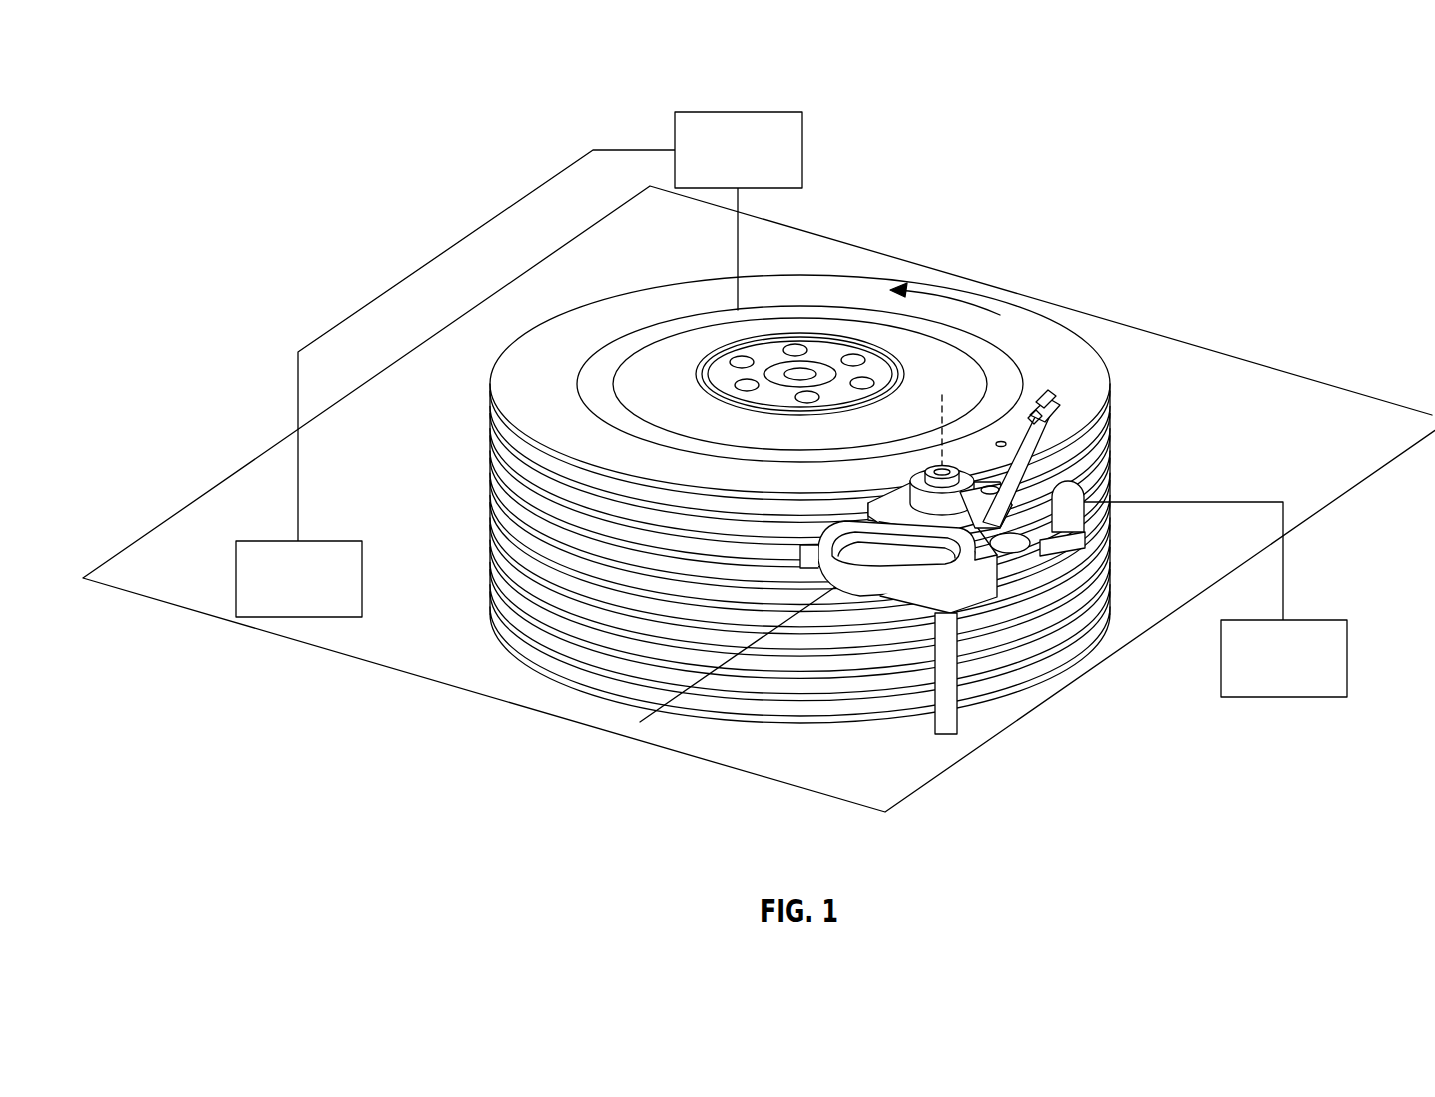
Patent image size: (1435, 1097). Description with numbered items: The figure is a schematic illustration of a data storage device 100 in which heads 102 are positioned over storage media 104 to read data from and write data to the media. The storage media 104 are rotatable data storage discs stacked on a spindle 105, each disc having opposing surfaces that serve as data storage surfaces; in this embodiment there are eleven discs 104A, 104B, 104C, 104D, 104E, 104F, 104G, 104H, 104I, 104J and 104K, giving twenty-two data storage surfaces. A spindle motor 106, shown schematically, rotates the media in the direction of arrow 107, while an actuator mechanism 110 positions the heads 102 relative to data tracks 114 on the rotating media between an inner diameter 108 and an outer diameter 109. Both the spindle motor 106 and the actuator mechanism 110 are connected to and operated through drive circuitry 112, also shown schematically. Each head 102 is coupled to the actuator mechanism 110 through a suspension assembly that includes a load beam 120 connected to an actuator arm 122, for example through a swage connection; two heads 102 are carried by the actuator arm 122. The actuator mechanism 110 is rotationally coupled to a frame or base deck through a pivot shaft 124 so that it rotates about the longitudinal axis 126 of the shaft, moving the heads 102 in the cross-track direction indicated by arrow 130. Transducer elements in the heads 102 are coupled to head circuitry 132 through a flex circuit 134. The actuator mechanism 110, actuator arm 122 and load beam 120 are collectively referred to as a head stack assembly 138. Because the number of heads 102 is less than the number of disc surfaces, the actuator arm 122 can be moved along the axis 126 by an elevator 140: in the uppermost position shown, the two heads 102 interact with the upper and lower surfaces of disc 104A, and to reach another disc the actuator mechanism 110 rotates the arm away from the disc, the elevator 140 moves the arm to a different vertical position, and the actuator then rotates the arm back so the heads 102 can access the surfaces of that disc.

The data storage device 100 is at (1230, 264).
The heads 102 is at (1052, 394).
The storage media 104 is at (788, 298).
The disc 104A is at (490, 386).
The disc 104B is at (490, 409).
The disc 104C is at (490, 432).
The disc 104D is at (490, 454).
The disc 104E is at (490, 477).
The disc 104F is at (490, 499).
The disc 104G is at (490, 521).
The disc 104H is at (490, 544).
The disc 104I is at (490, 566).
The disc 104J is at (490, 588).
The disc 104K is at (500, 645).
The spindle 105 is at (806, 372).
The spindle motor 106 is at (738, 112).
The arrow 107 is at (932, 290).
The inner diameter 108 is at (808, 337).
The outer diameter 109 is at (1063, 328).
The actuator mechanism 110 is at (890, 585).
The drive circuitry 112 is at (262, 541).
The data tracks 114 is at (1033, 410).
The load beam 120 is at (1003, 382).
The actuator arm 122 is at (1090, 515).
The pivot shaft 124 is at (915, 478).
The longitudinal axis 126 is at (945, 447).
The arrow 130 is at (1058, 402).
The head circuitry 132 is at (1312, 620).
The flex circuit 134 is at (1088, 490).
The head stack assembly 138 is at (860, 578).
The elevator 140 is at (1095, 546).